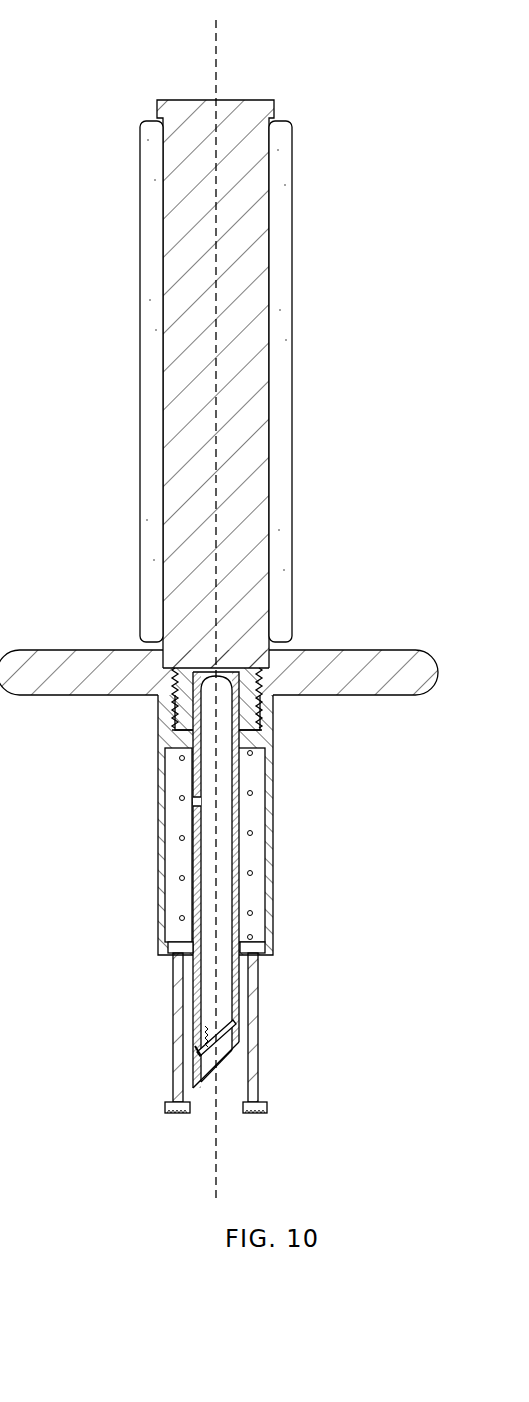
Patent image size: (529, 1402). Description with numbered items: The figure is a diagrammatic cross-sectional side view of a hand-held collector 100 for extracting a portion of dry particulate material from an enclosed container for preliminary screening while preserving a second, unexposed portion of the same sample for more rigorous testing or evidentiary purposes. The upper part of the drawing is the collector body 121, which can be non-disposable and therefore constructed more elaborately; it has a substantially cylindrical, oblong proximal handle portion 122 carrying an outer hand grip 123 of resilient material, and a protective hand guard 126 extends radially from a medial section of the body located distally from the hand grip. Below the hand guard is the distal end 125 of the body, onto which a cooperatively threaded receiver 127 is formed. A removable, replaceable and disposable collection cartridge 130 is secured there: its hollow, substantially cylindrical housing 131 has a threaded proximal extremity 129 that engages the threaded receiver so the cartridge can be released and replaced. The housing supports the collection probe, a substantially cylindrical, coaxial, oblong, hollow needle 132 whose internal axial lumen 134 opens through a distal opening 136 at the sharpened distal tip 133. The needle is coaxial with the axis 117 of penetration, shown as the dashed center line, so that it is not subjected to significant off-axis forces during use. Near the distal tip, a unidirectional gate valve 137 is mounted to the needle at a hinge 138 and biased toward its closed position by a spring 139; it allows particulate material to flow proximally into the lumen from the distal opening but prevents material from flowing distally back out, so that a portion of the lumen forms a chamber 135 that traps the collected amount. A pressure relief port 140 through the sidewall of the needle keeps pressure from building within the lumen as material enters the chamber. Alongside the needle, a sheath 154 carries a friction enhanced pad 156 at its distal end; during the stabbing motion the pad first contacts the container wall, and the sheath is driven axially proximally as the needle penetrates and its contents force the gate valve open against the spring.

The hand-held collector 100 is at (219, 611).
The axis of penetration 117 is at (215, 58).
The collector body 121 is at (236, 529).
The proximal handle portion 122 is at (270, 238).
The hand grip 123 is at (283, 163).
The distal end of the collector body 125 is at (275, 715).
The hand guard 126 is at (384, 650).
The threaded receiver 127 is at (167, 670).
The threaded proximal extremity 129 is at (185, 702).
The collection cartridge 130 is at (199, 925).
The housing 131 is at (158, 905).
The needle 132 is at (266, 858).
The distal tip 133 is at (185, 1080).
The lumen 134 is at (226, 826).
The chamber 135 is at (208, 990).
The distal opening 136 is at (207, 1084).
The gate valve 137 is at (242, 1043).
The hinge 138 is at (197, 1050).
The spring 139 is at (214, 1029).
The pressure relief port 140 is at (203, 798).
The sheath 154 is at (262, 1073).
The friction enhanced pad 156 is at (258, 1115).